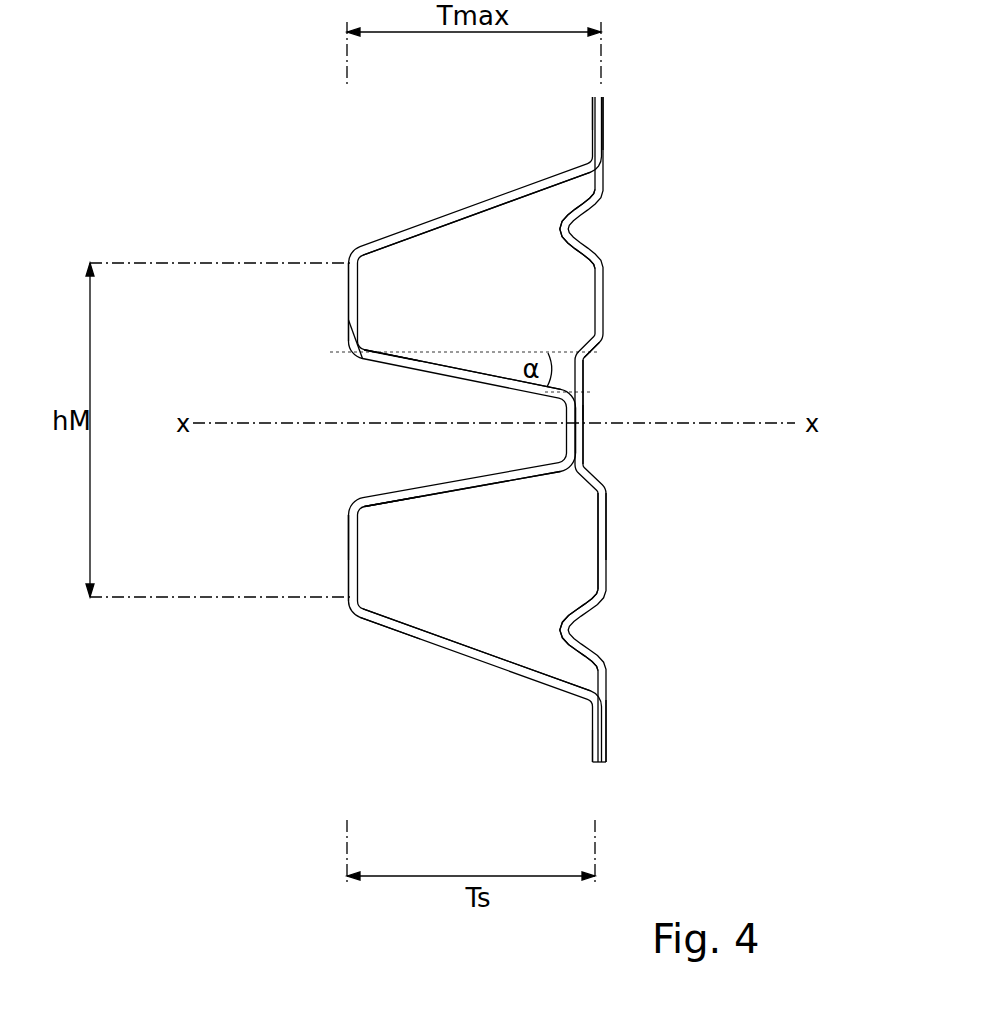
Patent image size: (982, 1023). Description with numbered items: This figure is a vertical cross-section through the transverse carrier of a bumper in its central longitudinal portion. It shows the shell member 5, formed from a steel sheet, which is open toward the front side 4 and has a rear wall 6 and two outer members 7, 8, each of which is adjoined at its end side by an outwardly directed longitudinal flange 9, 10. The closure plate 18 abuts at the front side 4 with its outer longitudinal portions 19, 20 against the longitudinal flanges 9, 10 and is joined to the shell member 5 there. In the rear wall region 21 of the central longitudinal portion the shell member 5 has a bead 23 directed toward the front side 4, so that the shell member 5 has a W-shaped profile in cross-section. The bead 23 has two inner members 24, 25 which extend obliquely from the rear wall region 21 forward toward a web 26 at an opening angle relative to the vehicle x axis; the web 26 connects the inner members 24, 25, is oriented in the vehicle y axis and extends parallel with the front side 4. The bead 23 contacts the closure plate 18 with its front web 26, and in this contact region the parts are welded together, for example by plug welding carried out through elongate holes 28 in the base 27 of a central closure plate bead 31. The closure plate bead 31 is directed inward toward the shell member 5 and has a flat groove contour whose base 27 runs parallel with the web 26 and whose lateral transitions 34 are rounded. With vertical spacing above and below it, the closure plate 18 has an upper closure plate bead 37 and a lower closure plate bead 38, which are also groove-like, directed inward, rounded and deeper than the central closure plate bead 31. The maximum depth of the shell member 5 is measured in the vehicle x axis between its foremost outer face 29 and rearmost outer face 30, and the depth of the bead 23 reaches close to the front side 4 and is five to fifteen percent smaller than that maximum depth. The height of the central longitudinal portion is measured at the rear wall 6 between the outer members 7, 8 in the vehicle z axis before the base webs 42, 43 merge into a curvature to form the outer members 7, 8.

The front side 4 is at (693, 182).
The shell member 5 is at (418, 660).
The rear wall 6 is at (340, 612).
The outer member 7 is at (463, 208).
The outer member 8 is at (472, 657).
The longitudinal flange 9 is at (593, 125).
The longitudinal flange 10 is at (593, 730).
The closure plate 18 is at (608, 553).
The outer longitudinal portion 19 is at (607, 143).
The outer longitudinal portion 20 is at (605, 708).
The rear wall region 21 is at (345, 283).
The bead 23 is at (355, 462).
The inner member 24 is at (452, 377).
The inner member 25 is at (452, 480).
The web 26 is at (571, 423).
The base 27 is at (600, 395).
The elongate hole 28 is at (600, 413).
The foremost outer face 29 is at (603, 750).
The rearmost outer face 30 is at (350, 560).
The closure plate bead 31 is at (620, 460).
The lateral transition 34 is at (600, 347).
The upper closure plate bead 37 is at (593, 231).
The lower closure plate bead 38 is at (590, 632).
The base web 42 is at (350, 318).
The base web 43 is at (350, 537).